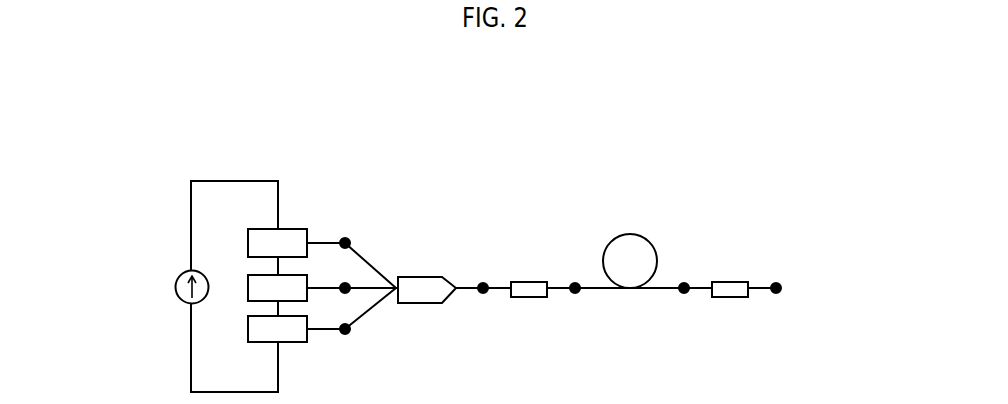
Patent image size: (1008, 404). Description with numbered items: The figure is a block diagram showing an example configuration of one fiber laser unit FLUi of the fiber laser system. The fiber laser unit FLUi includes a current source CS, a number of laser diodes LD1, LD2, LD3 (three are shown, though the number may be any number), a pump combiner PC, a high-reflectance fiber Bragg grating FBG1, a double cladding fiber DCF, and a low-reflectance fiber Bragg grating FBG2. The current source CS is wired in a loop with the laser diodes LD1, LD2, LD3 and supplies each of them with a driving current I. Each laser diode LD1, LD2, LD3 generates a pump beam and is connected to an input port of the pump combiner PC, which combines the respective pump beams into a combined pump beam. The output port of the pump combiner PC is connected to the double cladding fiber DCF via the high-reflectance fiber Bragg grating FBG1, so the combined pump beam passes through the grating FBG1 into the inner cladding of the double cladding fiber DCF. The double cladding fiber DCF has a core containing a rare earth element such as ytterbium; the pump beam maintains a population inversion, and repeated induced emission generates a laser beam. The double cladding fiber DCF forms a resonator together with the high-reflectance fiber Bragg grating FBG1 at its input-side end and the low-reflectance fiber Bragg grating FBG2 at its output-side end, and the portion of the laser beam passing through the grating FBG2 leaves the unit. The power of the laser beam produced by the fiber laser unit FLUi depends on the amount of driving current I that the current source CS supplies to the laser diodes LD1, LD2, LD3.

The current source CS is at (181, 276).
The driving current I is at (249, 178).
The laser diode LD1 is at (292, 229).
The laser diode LD2 is at (250, 274).
The laser diode LD3 is at (284, 342).
The pump combiner PC is at (421, 277).
The high-reflectance fiber Bragg grating FBG1 is at (528, 282).
The double cladding fiber DCF is at (629, 234).
The low-reflectance fiber Bragg grating FBG2 is at (731, 282).
The fiber laser unit FLUi is at (588, 197).